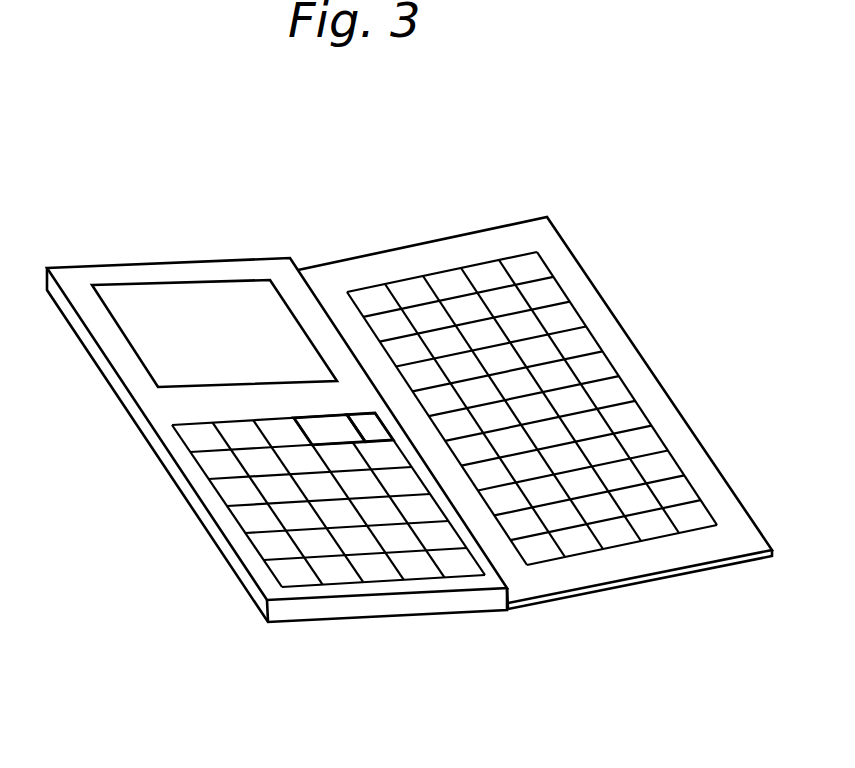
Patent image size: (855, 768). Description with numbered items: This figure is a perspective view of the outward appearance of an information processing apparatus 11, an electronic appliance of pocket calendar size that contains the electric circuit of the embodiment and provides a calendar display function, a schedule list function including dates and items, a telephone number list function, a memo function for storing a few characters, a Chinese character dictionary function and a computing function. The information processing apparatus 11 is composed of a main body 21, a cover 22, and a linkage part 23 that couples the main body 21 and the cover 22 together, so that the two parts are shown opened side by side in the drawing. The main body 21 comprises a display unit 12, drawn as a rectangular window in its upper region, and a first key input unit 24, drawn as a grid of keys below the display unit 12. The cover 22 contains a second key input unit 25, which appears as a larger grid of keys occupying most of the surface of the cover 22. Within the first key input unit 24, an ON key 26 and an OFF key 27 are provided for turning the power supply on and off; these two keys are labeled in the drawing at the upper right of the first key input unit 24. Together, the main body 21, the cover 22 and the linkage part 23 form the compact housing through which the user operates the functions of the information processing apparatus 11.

The information processing apparatus 11 is at (616, 188).
The display unit 12 is at (222, 298).
The main body 21 is at (273, 270).
The cover 22 is at (418, 253).
The linkage part 23 is at (510, 611).
The first key input unit 24 is at (212, 462).
The second key input unit 25 is at (582, 345).
The ON key 26 is at (352, 417).
The OFF key 27 is at (312, 417).